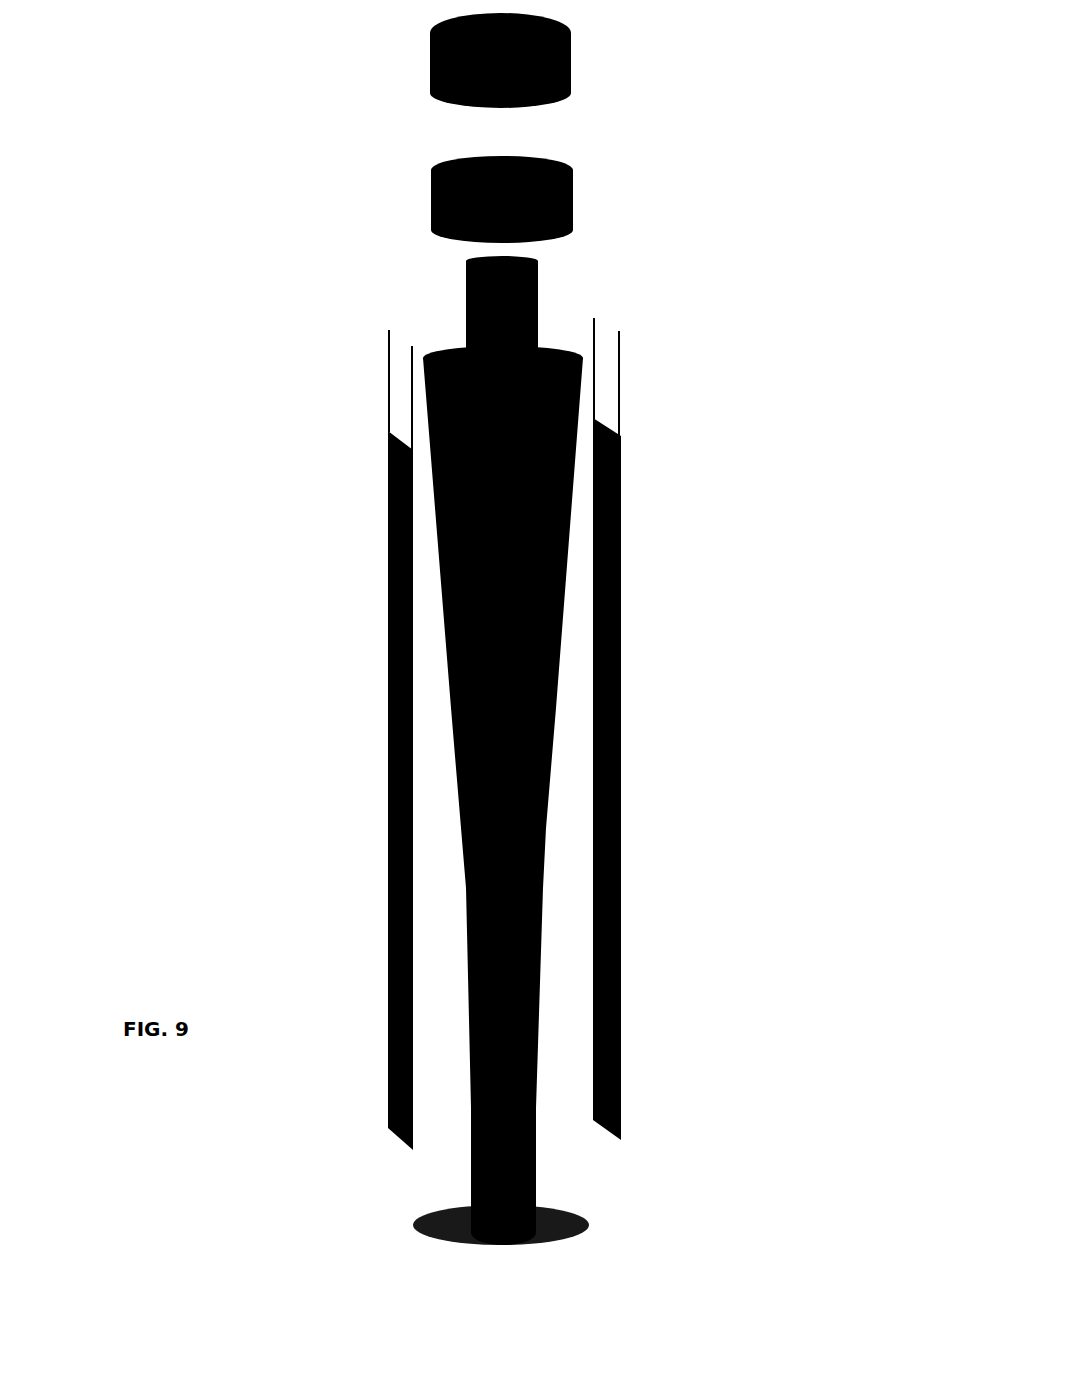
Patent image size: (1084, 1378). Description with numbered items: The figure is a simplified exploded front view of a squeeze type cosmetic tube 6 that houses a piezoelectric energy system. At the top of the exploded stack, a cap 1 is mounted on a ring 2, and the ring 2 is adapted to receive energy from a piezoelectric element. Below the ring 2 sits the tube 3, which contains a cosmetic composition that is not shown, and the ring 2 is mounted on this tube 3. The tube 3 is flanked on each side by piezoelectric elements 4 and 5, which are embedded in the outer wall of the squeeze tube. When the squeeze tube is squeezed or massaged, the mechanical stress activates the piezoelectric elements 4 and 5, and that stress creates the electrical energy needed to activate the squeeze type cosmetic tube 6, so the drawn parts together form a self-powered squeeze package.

The cap 1 is at (420, 52).
The ring 2 is at (415, 200).
The tube 3 is at (540, 300).
The piezoelectric element 4 is at (376, 480).
The piezoelectric element 5 is at (620, 719).
The squeeze type cosmetic tube 6 is at (433, 793).